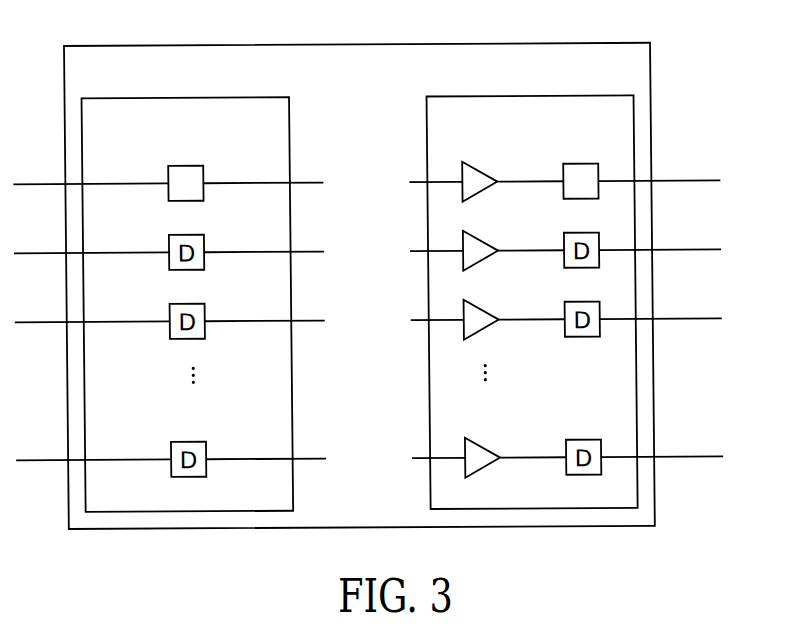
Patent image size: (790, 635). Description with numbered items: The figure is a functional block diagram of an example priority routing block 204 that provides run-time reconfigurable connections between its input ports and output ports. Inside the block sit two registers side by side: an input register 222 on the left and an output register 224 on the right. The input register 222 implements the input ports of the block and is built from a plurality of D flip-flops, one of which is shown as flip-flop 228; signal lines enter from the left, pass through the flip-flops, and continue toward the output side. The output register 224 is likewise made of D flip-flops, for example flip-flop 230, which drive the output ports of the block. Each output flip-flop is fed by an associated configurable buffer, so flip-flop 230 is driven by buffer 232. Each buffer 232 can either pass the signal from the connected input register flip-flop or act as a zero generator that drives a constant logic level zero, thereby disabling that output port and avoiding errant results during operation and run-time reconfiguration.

The priority routing block 204 is at (508, 46).
The input register 222 is at (130, 98).
The output register 224 is at (562, 98).
The flip-flop 228 is at (188, 167).
The flip-flop 230 is at (569, 167).
The buffer 232 is at (461, 164).